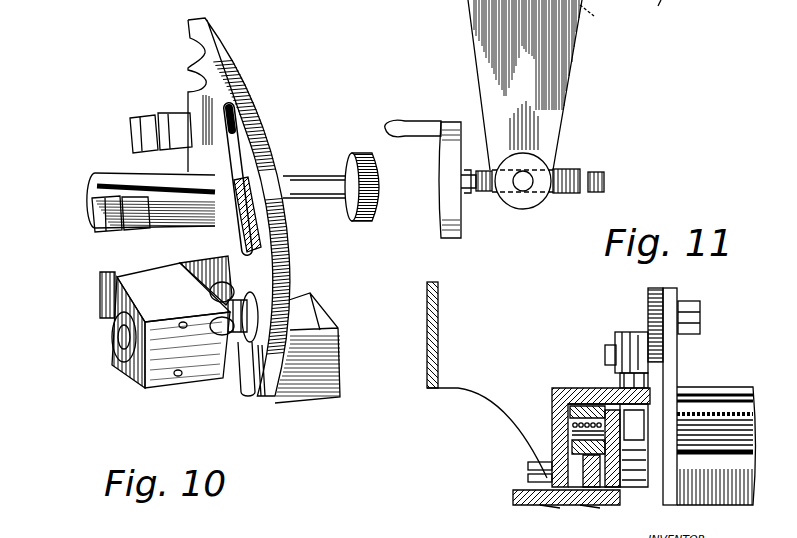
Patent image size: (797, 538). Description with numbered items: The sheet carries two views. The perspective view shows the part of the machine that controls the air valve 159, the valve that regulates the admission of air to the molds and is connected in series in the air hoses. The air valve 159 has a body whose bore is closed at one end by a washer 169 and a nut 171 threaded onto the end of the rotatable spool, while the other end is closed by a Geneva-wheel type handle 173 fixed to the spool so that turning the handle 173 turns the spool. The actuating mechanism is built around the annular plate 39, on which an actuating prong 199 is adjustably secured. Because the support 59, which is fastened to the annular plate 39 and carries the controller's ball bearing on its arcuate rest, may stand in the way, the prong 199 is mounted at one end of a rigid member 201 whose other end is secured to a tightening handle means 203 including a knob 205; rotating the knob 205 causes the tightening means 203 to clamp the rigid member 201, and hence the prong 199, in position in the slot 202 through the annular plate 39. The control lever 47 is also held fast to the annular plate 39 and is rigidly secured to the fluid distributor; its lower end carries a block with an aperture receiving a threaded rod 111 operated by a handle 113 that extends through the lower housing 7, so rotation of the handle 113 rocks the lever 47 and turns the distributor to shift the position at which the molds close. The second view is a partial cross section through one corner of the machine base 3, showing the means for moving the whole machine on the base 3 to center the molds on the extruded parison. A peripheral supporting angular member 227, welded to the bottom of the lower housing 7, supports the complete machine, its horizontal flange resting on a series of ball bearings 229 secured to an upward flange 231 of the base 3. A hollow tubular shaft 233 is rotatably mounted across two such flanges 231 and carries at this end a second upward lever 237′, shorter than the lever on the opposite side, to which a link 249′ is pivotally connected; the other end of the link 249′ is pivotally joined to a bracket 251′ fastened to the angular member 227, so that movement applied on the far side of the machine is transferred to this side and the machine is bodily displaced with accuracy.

In FIG. 10, the annular plate 39 is at (228, 60).
In FIG. 10, the slot 202 is at (233, 126).
In FIG. 10, the tightening handle means 203 is at (314, 177).
In FIG. 10, the rigid member 201 is at (268, 253).
In FIG. 10, the knob 205 is at (356, 225).
In FIG. 10, the actuating prong 199 is at (248, 314).
In FIG. 10, the support 59 is at (322, 353).
In FIG. 11, the support 59 is at (654, 15).
In FIG. 10, the nut 171 is at (111, 346).
In FIG. 10, the washer 169 is at (120, 360).
In FIG. 10, the air valve 159 is at (148, 388).
In FIG. 11, the air valve 159 is at (597, 21).
In FIG. 10, the Geneva-wheel handle 173 is at (232, 372).
In FIG. 11, the control lever 47 is at (487, 35).
In FIG. 11, the threaded rod 111 is at (572, 172).
In FIG. 11, the handle 113 is at (452, 200).
In FIG. 11, the lower housing 7 is at (427, 358).
In FIG. 11, the peripheral supporting angular member 227 is at (562, 388).
In FIG. 11, the bracket 251′ is at (627, 333).
In FIG. 11, the link 249′ is at (653, 306).
In FIG. 11, the second upward lever 237′ is at (670, 353).
In FIG. 11, the shaft 233 is at (728, 400).
In FIG. 11, the ball bearings 229 is at (588, 467).
In FIG. 11, the upward flange 231 is at (610, 465).
In FIG. 11, the base 3 is at (513, 502).